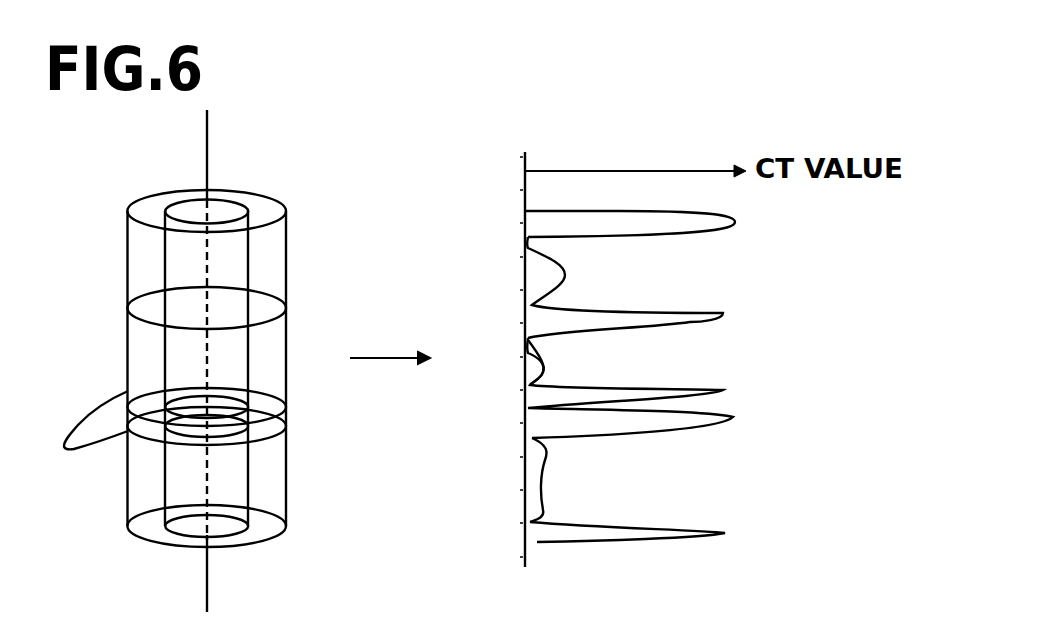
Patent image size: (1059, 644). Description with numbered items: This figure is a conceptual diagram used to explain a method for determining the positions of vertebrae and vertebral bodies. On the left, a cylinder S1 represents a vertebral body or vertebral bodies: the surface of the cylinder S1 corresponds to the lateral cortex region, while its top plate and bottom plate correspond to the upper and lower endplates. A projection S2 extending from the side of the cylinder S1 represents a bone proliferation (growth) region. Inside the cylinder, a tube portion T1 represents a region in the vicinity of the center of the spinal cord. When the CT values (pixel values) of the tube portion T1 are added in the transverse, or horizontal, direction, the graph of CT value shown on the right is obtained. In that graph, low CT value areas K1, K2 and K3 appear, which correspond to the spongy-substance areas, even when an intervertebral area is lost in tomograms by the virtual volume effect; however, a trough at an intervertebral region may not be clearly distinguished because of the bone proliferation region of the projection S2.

The tube portion T1 is at (248, 248).
The cylinder S1 is at (286, 393).
The projection S2 is at (77, 452).
The low CT value area K1 is at (509, 245).
The low CT value area K2 is at (509, 343).
The low CT value area K3 is at (509, 440).